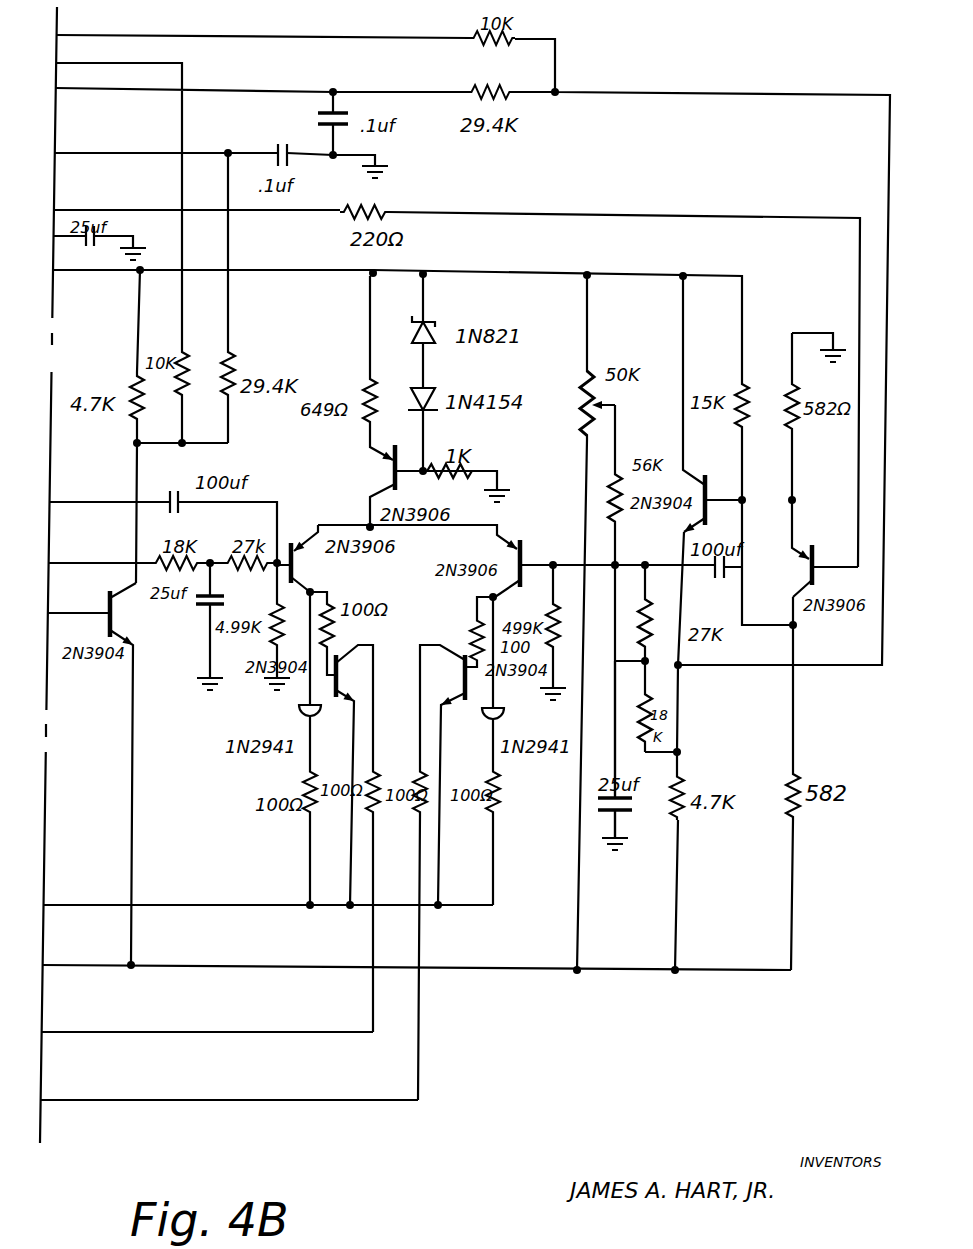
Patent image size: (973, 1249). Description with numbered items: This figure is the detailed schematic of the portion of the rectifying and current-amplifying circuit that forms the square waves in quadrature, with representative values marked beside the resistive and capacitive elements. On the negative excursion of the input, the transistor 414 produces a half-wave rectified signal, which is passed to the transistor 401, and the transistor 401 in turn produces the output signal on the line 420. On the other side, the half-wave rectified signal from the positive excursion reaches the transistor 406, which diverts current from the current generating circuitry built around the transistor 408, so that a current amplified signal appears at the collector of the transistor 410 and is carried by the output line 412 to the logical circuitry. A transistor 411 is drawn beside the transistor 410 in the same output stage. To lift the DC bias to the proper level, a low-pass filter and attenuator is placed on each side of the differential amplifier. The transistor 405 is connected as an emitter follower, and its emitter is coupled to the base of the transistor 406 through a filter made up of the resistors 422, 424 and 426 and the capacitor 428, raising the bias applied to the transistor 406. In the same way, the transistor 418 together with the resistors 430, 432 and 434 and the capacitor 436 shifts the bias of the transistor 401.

The transistor 401 is at (548, 543).
The transistor 405 is at (120, 614).
The transistor 406 is at (300, 568).
The transistor 408 is at (388, 474).
The transistor 410 is at (352, 675).
The transistor 2N3904 411 is at (448, 668).
The output line 412 is at (270, 1034).
The transistor 414 is at (830, 524).
The transistor 418 is at (710, 491).
The line 420 is at (215, 1100).
The resistor 422 is at (150, 558).
The resistor 424 is at (226, 557).
The resistor 426 is at (231, 626).
The capacitor 428 is at (200, 612).
The resistor 430 is at (553, 620).
The resistor 432 is at (640, 623).
The resistor 434 is at (645, 690).
The capacitor 436 is at (645, 806).